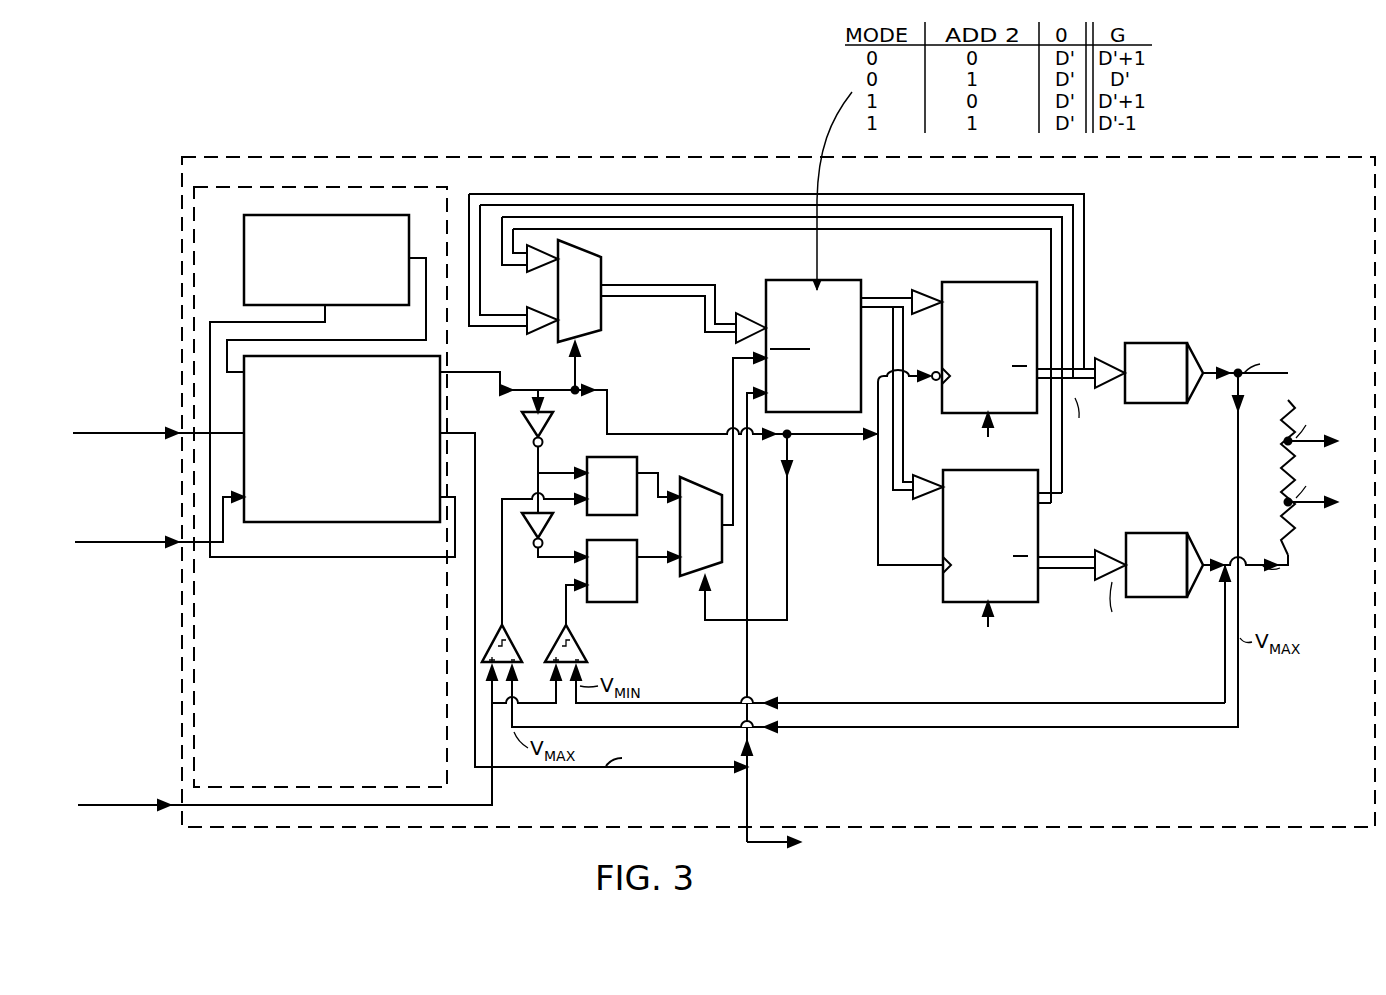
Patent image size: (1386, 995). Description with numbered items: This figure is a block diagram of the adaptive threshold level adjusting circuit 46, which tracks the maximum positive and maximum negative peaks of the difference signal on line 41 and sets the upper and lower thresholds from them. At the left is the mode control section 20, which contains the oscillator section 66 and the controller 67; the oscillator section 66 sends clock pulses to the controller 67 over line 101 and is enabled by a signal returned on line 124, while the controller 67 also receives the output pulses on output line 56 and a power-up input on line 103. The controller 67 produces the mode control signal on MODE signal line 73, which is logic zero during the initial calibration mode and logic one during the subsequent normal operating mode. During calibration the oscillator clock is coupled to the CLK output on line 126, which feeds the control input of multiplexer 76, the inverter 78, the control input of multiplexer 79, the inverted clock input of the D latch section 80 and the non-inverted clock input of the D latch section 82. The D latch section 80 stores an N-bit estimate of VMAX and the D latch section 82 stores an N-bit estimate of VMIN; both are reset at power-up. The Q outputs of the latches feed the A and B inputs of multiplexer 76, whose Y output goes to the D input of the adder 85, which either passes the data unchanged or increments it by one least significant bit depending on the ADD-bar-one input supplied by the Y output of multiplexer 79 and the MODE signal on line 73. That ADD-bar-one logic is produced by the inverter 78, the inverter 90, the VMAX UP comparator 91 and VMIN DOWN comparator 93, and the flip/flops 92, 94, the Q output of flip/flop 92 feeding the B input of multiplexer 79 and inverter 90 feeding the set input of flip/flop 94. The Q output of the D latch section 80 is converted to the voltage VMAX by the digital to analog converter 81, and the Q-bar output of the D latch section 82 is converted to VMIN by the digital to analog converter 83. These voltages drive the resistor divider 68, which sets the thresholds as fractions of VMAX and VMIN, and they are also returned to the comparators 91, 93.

The mode control section 20 is at (210, 188).
The line 41 is at (270, 806).
The threshold level adjusting circuit 46 is at (182, 243).
The output line 56 is at (112, 435).
The oscillator section 66 is at (244, 277).
The controller 67 is at (332, 431).
The resistor divider 68 is at (1333, 398).
The MODE signal line 73 is at (458, 434).
The multiplexer 76 is at (584, 338).
The inverter 78 is at (548, 433).
The multiplexer 79 is at (688, 582).
The D latch section 80 is at (962, 282).
The digital to analog converter 81 is at (1146, 343).
The D latch section 82 is at (943, 590).
The digital to analog converter 83 is at (1146, 533).
The adder 85 is at (832, 280).
The inverter 90 is at (550, 530).
The comparator 91 is at (512, 640).
The flip/flop 92 is at (624, 459).
The comparator 93 is at (576, 640).
The flip/flop 94 is at (624, 542).
The line 101 is at (342, 340).
The power up line 103 is at (128, 544).
The line 124 is at (322, 557).
The line 126 is at (472, 372).